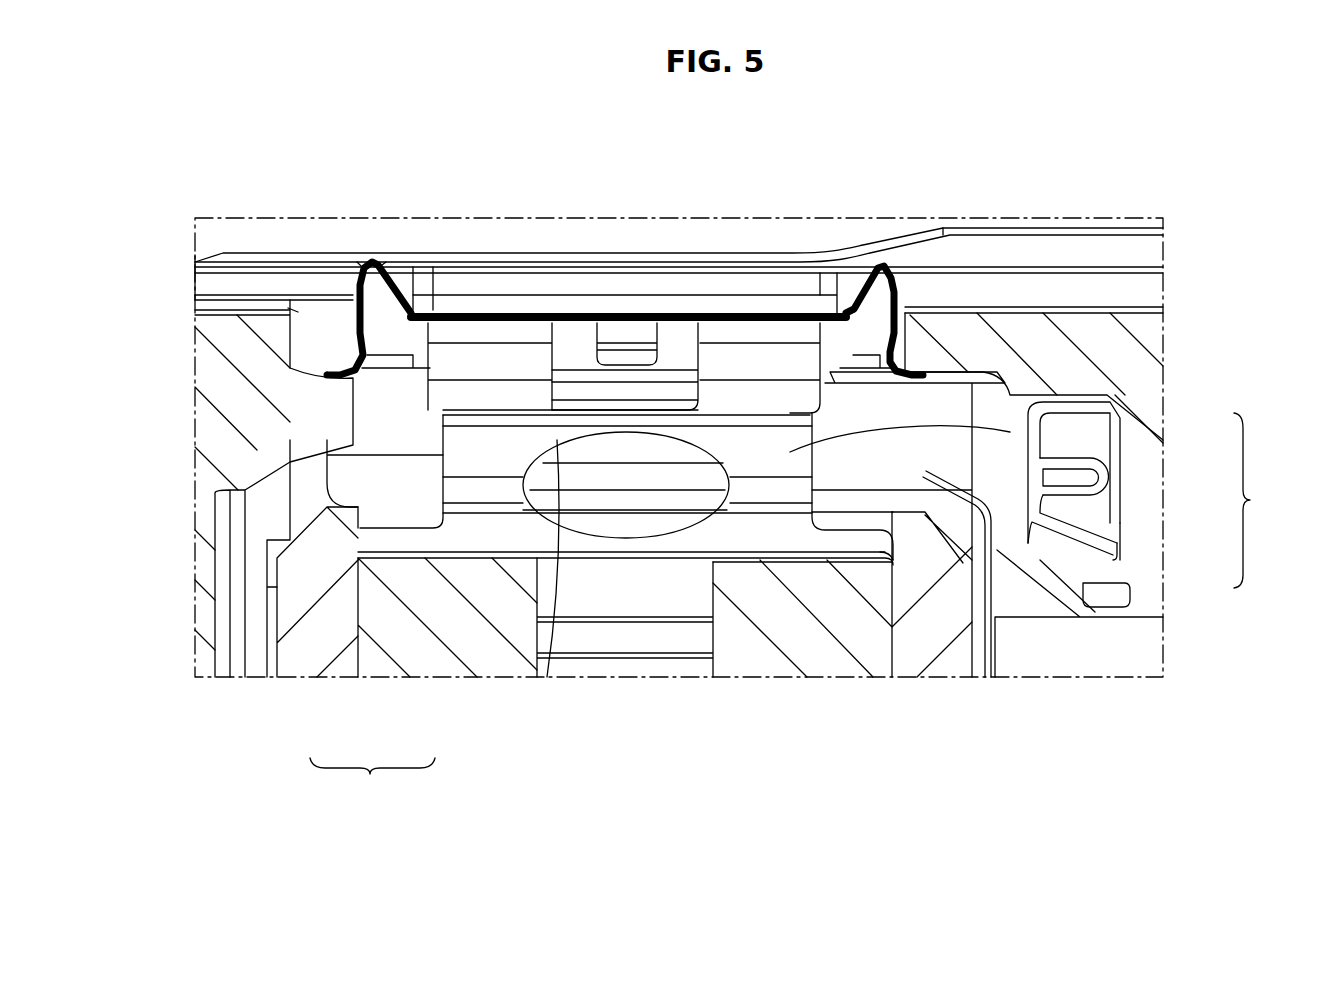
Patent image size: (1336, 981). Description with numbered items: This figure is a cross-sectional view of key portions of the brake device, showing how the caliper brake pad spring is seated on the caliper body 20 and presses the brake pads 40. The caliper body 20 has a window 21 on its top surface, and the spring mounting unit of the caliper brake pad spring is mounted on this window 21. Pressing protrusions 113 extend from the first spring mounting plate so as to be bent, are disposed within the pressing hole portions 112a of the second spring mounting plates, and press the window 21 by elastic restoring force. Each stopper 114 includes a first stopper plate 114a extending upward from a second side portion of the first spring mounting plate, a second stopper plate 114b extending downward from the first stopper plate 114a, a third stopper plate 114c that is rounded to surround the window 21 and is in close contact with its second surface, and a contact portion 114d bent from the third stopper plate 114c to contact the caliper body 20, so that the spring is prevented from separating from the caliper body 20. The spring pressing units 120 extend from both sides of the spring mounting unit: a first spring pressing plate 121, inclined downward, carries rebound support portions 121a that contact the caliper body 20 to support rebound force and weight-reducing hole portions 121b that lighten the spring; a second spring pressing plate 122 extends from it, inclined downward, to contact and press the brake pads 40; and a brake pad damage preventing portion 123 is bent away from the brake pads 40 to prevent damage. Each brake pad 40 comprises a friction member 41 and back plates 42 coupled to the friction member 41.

The caliper body 20 is at (1048, 337).
The window 21 is at (793, 290).
The brake pads 40 is at (372, 778).
The friction member 41 is at (418, 647).
The back plates 42 is at (327, 643).
The pressing hole portions 112a is at (677, 320).
The pressing protrusions 113 is at (620, 335).
The stoppers 114 is at (882, 265).
The first stopper plate 114a is at (380, 280).
The second stopper plate 114b is at (357, 267).
The third stopper plate 114c is at (293, 310).
The contact portion 114d is at (330, 378).
The spring pressing units 120 is at (1267, 500).
The first spring pressing plate 121 is at (1050, 440).
The rebound support portions 121a is at (440, 400).
The weight-reducing hole portions 121b is at (548, 678).
The second spring pressing plate 122 is at (847, 540).
The brake pad damage preventing portion 123 is at (900, 550).